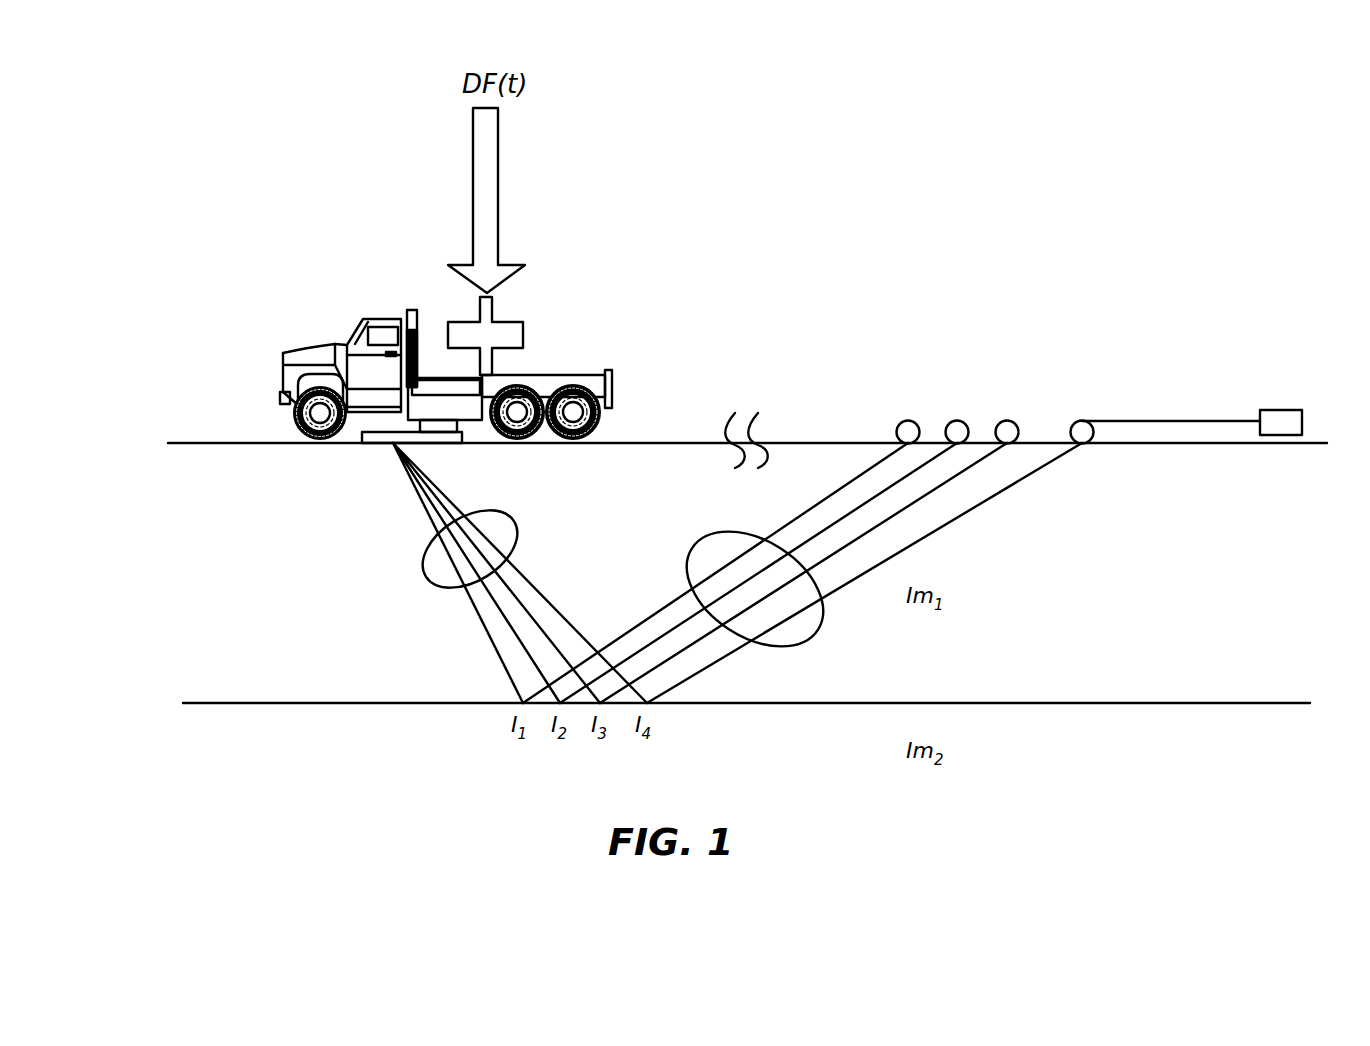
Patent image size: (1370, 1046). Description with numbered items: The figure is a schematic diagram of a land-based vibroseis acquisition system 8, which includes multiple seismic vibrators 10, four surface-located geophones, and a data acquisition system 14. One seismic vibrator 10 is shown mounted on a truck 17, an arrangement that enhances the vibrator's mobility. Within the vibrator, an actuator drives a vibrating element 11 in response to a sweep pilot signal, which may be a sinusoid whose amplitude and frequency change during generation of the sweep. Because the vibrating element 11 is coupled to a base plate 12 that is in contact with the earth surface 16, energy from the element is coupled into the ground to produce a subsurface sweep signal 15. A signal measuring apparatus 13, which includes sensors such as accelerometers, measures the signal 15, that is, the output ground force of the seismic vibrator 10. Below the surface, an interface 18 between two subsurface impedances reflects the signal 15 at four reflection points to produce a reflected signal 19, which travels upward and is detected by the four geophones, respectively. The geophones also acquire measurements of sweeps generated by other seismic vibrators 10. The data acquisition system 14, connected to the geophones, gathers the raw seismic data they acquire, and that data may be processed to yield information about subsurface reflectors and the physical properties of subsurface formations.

The vibroseis acquisition system 8 is at (1123, 363).
The seismic vibrator 10 is at (250, 296).
The vibrating element 11 is at (522, 308).
The base plate 12 is at (380, 432).
The signal measuring apparatus 13 is at (433, 425).
The data acquisition system 14 is at (1280, 410).
The subsurface sweep signal 15 is at (427, 582).
The earth surface 16 is at (233, 442).
The truck 17 is at (387, 320).
The interface 18 is at (1160, 703).
The reflected signal 19 is at (818, 635).